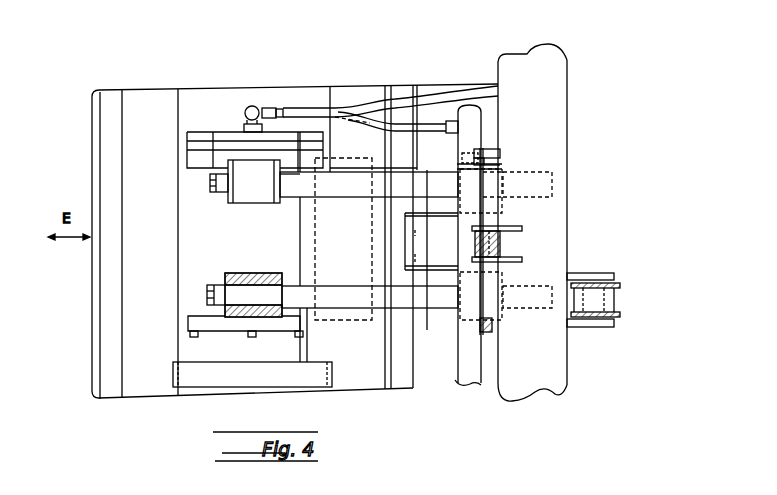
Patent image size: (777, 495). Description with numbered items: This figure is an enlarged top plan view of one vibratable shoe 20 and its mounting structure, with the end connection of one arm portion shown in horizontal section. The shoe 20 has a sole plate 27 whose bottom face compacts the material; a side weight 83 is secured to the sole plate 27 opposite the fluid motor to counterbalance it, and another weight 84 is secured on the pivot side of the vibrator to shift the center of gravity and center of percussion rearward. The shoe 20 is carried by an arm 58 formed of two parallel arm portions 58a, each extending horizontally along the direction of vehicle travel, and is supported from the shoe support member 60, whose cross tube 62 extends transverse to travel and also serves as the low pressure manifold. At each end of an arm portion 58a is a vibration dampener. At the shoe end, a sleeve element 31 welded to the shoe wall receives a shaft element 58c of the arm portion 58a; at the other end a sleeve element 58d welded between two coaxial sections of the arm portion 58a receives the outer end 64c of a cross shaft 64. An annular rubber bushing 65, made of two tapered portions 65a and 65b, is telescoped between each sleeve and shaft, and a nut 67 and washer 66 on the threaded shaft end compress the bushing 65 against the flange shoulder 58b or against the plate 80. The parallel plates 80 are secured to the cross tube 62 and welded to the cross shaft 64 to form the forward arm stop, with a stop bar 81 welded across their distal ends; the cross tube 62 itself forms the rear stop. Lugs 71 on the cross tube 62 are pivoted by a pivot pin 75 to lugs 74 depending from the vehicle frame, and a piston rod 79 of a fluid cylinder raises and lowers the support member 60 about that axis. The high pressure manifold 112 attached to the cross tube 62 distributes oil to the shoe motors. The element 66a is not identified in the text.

The vibratable shoe 20 is at (172, 90).
The sole plate 27 is at (165, 393).
The sleeve element 31 is at (242, 273).
The arm 58 is at (384, 239).
The arm portion 58a is at (440, 173).
The flange shoulder 58b is at (290, 197).
The shaft element 58c is at (253, 295).
The sleeve element 58d is at (487, 180).
The shoe support member 60 is at (503, 412).
The cross tube 62 is at (567, 374).
The cross shaft 64 is at (500, 221).
The outer end of cross shaft 64c is at (480, 150).
The vibration dampener bushing 65 is at (258, 318).
The bushing portion 65a is at (490, 326).
The bushing portion 65b is at (225, 275).
The washer 66 is at (229, 160).
The clamp bar end 66a is at (276, 273).
The nut 67 is at (223, 197).
The lug 71 is at (583, 273).
The lug 74 is at (620, 284).
The pivot pin 75 is at (618, 298).
The piston rod 79 is at (500, 243).
The plate 80 is at (448, 213).
The stop bar 81 is at (414, 246).
The side weight 83 is at (252, 374).
The weight 84 is at (343, 239).
The high pressure manifold 112 is at (462, 381).